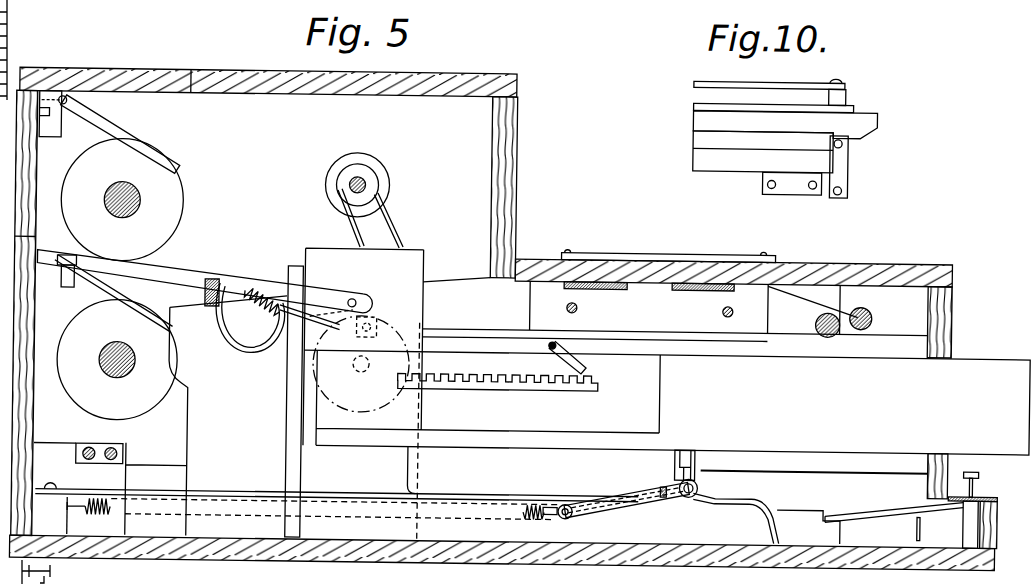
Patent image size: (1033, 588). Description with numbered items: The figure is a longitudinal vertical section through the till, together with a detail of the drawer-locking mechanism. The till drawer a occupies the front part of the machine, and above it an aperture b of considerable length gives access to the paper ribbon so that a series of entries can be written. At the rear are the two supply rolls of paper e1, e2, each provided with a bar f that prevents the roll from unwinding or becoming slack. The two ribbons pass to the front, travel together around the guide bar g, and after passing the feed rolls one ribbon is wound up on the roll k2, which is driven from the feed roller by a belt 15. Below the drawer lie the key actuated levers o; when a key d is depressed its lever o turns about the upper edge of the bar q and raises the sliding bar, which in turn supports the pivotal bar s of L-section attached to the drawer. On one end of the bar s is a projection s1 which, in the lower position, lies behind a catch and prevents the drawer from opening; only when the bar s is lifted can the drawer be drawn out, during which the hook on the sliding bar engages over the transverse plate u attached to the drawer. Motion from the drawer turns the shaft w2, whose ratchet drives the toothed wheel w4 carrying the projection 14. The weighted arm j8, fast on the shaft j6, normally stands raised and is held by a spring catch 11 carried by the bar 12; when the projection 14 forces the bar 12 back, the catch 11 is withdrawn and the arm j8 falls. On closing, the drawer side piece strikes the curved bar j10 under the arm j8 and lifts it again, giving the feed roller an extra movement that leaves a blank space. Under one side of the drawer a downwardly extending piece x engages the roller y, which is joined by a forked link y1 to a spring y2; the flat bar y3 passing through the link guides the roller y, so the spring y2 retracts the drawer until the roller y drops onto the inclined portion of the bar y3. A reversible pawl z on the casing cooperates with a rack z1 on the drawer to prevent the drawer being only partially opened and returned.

In FIG. 5, the bar f is at (110, 127).
In FIG. 5, the supply roll of paper e1 is at (171, 210).
In FIG. 5, the supply roll of paper e2 is at (117, 360).
In FIG. 5, the bar 12 is at (151, 268).
In FIG. 5, the spring catch 11 is at (216, 272).
In FIG. 5, the weighted arm j8 is at (269, 277).
In FIG. 5, the shaft j6 is at (356, 294).
In FIG. 5, the curved bar j10 is at (249, 344).
In FIG. 5, the winding roll k2 is at (387, 170).
In FIG. 5, the belt 15 is at (401, 217).
In FIG. 5, the projection 14 is at (381, 308).
In FIG. 5, the toothed wheel w4 is at (416, 312).
In FIG. 5, the shaft w2 is at (360, 367).
In FIG. 5, the reversible pawl z is at (597, 362).
In FIG. 5, the rack z1 is at (548, 379).
In FIG. 5, the aperture b is at (634, 244).
In FIG. 5, the guide bar g is at (873, 306).
In FIG. 5, the till drawer a is at (667, 351).
In FIG. 5, the downwardly extending piece x is at (658, 456).
In FIG. 5, the roller y is at (707, 479).
In FIG. 5, the forked link y1 is at (608, 500).
In FIG. 5, the spring y2 is at (107, 516).
In FIG. 5, the flat bar y3 is at (727, 490).
In FIG. 5, the key actuated lever o is at (903, 500).
In FIG. 5, the bar q is at (924, 513).
In FIG. 5, the key d is at (985, 461).
In FIG. 10, the pivotal bar s is at (714, 105).
In FIG. 10, the projection s1 is at (862, 98).
In FIG. 10, the transverse plate u is at (712, 132).